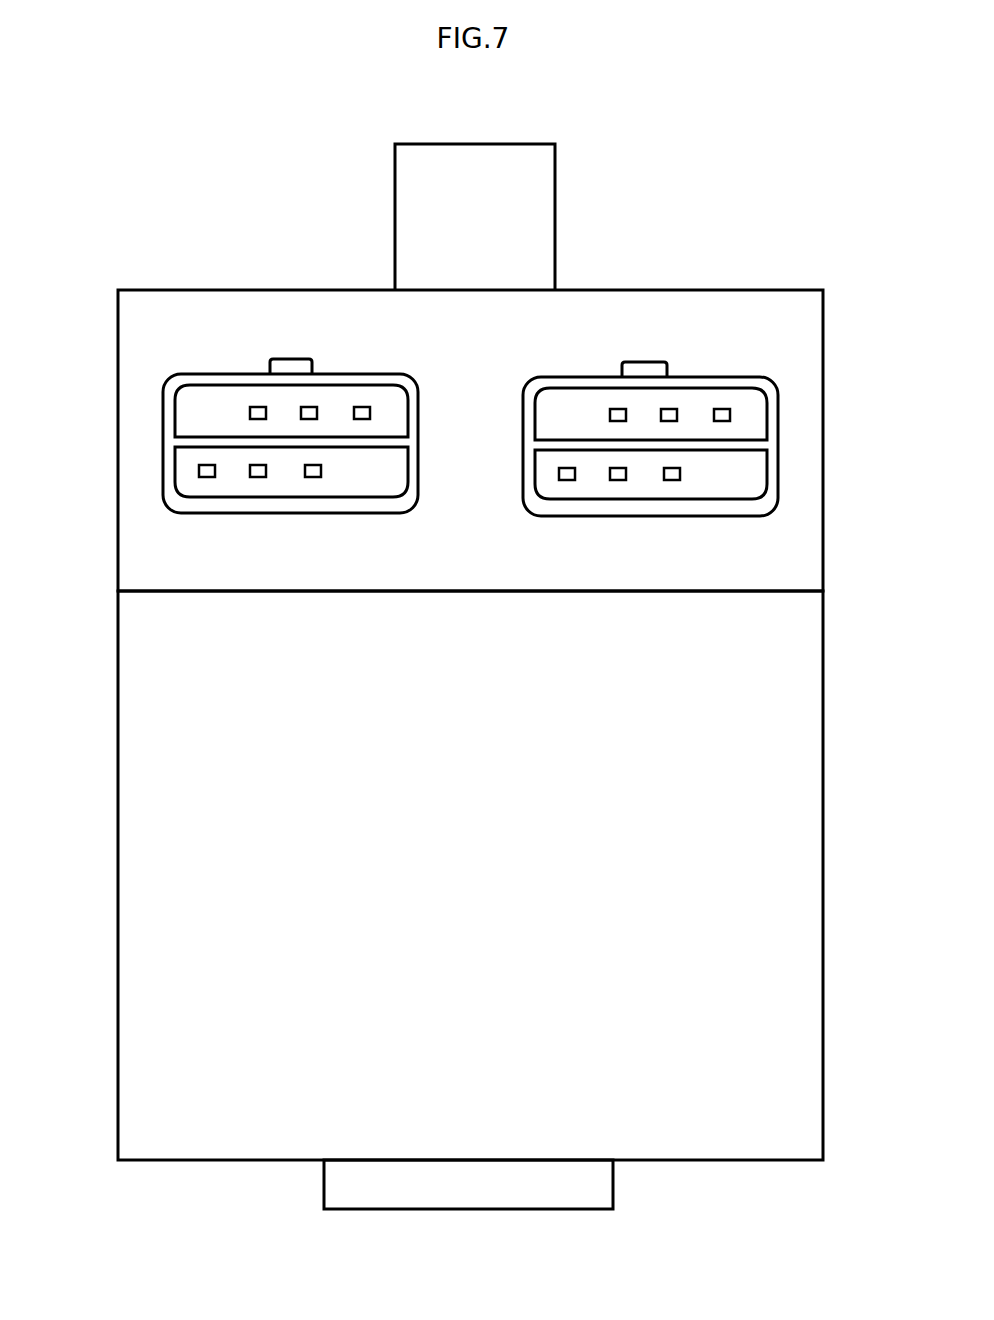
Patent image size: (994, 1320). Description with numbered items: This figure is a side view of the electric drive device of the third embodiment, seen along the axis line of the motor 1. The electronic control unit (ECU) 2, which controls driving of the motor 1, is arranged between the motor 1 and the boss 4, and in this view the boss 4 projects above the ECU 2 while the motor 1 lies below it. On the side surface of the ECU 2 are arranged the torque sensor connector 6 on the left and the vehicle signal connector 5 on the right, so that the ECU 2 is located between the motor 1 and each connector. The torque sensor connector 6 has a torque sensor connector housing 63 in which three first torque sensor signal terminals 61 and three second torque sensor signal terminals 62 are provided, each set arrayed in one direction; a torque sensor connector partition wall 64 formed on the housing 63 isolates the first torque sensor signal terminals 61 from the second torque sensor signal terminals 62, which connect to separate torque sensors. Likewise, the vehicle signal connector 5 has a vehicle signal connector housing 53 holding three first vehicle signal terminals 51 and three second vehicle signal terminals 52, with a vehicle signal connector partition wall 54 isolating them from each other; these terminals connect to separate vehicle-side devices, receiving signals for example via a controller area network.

The motor 1 is at (128, 848).
The electronic control unit (ECU) 2 is at (130, 315).
The boss 4 is at (548, 166).
The vehicle signal connector 5 is at (762, 380).
The first vehicle signal terminal 51 is at (721, 409).
The second vehicle signal terminal 52 is at (680, 474).
The vehicle signal connector housing 53 is at (772, 405).
The vehicle signal connector partition wall 54 is at (585, 445).
The torque sensor connector 6 is at (178, 380).
The first torque sensor signal terminal 61 is at (256, 407).
The second torque sensor signal terminal 62 is at (207, 472).
The torque sensor connector housing 63 is at (168, 405).
The torque sensor connector partition wall 64 is at (342, 445).